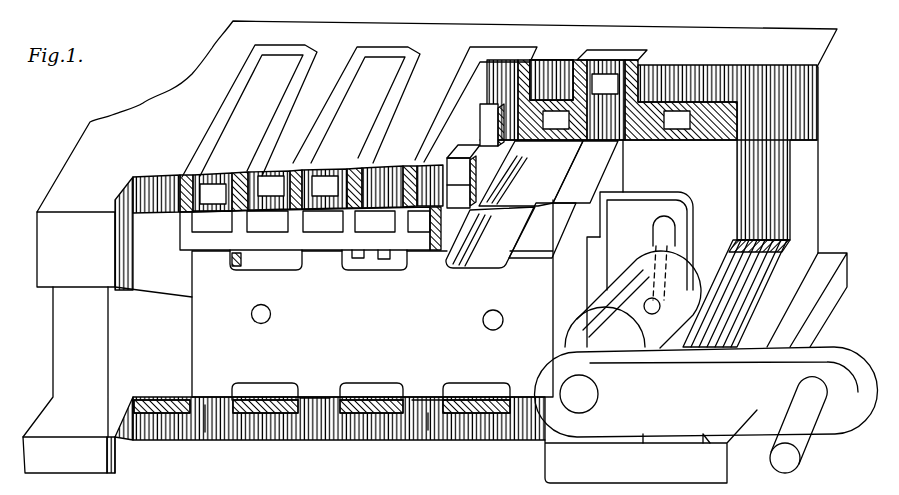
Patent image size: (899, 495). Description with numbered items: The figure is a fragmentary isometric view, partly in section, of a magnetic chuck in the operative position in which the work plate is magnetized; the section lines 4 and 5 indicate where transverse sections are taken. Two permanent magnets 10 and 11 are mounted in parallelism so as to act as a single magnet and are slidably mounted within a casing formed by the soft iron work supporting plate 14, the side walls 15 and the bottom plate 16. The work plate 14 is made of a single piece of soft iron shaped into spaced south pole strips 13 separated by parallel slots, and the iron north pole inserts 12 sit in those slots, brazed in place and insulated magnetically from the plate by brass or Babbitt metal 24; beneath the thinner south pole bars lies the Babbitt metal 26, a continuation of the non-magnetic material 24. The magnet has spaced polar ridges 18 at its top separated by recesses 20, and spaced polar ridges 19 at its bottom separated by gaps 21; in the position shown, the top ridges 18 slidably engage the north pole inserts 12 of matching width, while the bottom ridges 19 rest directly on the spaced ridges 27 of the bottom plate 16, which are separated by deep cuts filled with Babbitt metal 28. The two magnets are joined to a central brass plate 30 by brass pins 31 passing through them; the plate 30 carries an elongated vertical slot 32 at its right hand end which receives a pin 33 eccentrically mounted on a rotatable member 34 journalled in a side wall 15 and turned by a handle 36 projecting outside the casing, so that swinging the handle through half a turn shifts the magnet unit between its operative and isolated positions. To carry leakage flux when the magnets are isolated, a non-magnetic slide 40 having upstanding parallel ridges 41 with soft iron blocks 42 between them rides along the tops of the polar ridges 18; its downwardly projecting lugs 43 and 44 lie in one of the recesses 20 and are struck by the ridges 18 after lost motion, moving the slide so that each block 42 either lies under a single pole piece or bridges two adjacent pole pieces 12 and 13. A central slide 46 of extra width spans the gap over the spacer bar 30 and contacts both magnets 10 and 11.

The section line 4- 4 is at (253, 100).
The section line 5- 5 is at (423, 88).
The permanent magnet 10 is at (372, 298).
The permanent magnet 11 is at (624, 162).
The north pole piece 12 is at (370, 175).
The south pole piece 13 is at (410, 123).
The work supporting plate 14 is at (437, 159).
The side wall 15 is at (420, 251).
The bottom plate 16 is at (316, 436).
The polar ridge 18 is at (531, 181).
The polar ridge 19 is at (316, 398).
The recess 20 is at (492, 219).
The recess 21 is at (274, 384).
The non-magnetic metal 24 is at (362, 62).
The Babbitt metal 26 is at (627, 100).
The ridge 27 is at (205, 432).
The Babbitt metal 28 is at (261, 414).
The central brass plate 30 is at (599, 292).
The brass pin 31 is at (271, 316).
The elongated vertical slot 32 is at (676, 226).
The pin 33 is at (690, 258).
The rotatable member 34 is at (633, 299).
The handle 36 is at (706, 410).
The slide 40 is at (524, 160).
The ridge 41 is at (186, 216).
The block 42 is at (267, 222).
The lug 43 is at (342, 257).
The lug 44 is at (387, 270).
The central slide 46 is at (476, 222).